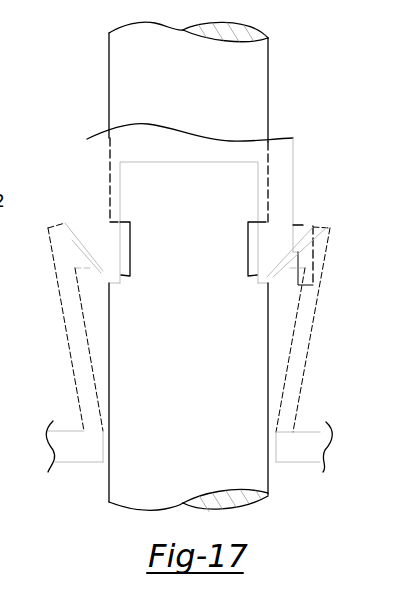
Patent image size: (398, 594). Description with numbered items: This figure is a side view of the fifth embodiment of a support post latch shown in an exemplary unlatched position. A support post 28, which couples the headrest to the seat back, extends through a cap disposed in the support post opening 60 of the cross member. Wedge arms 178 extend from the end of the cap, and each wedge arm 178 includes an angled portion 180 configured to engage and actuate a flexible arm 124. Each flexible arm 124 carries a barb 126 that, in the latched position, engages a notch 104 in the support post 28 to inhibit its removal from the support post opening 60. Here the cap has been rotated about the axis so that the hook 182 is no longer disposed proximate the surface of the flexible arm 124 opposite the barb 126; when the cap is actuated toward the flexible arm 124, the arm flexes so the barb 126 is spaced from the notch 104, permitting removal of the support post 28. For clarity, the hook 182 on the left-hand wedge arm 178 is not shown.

The support post 28 is at (199, 372).
The support post opening 60 is at (106, 463).
The notch 104 is at (248, 243).
The flexible arm 124 is at (72, 366).
The barb 126 is at (80, 237).
The wedge arm 178 is at (84, 168).
The angled portion 180 is at (100, 270).
The hook 182 is at (298, 222).